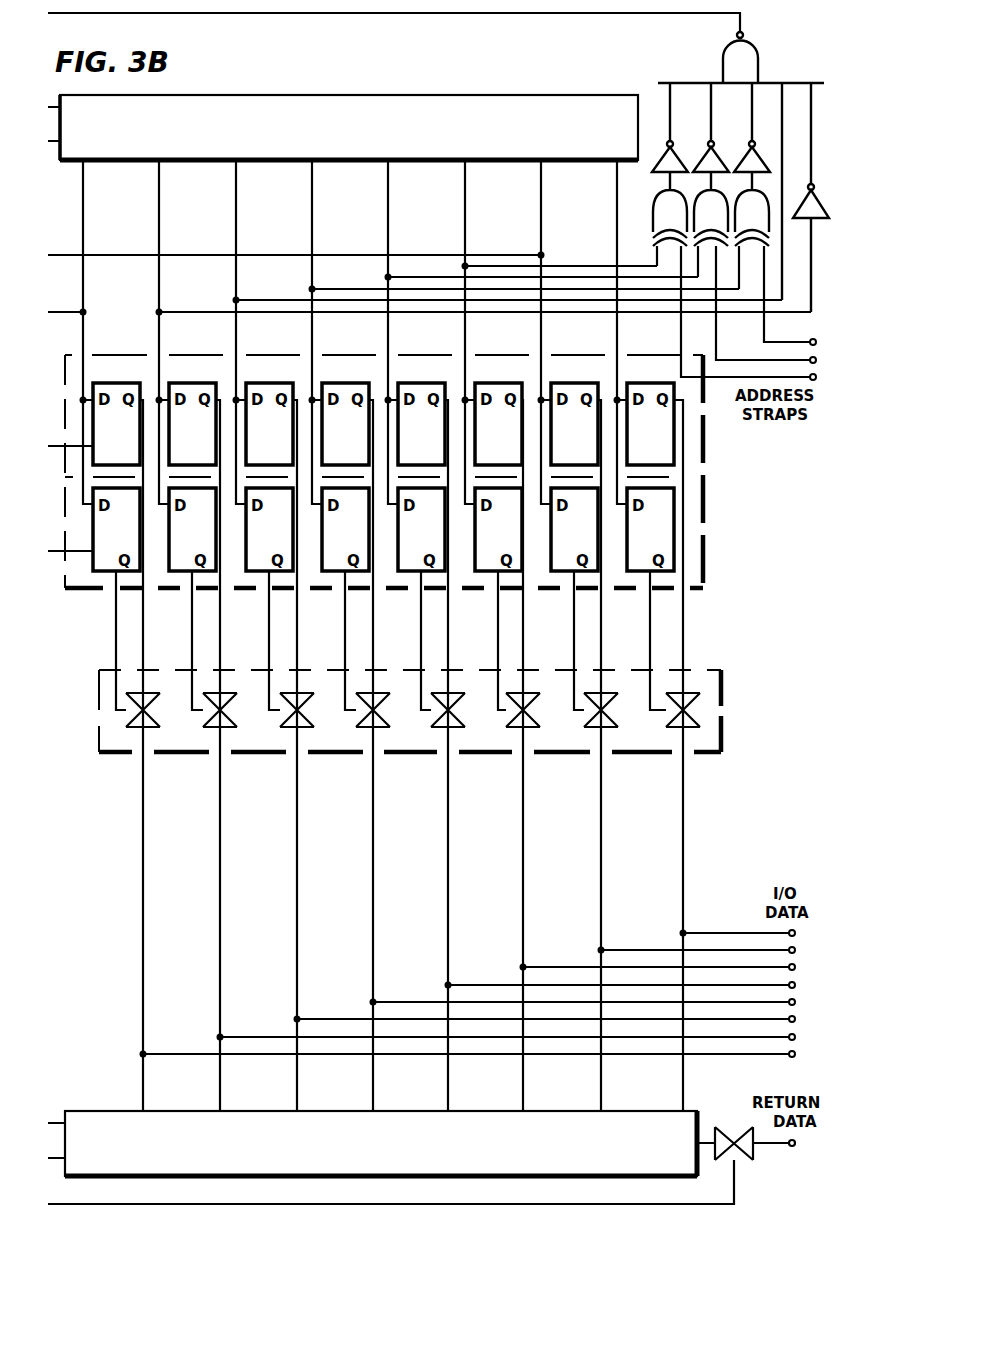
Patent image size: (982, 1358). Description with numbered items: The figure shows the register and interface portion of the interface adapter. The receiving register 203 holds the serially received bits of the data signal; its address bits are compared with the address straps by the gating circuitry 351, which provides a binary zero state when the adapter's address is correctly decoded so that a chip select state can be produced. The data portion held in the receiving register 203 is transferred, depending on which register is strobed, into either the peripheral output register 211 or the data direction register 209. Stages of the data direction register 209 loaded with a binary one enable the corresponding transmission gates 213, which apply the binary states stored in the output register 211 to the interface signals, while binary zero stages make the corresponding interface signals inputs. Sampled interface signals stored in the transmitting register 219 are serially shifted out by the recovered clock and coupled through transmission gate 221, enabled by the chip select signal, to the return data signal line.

The receiving register 203 is at (433, 95).
The gating circuitry 351 is at (710, 76).
The peripheral output register 211 is at (582, 355).
The data direction register 209 is at (415, 456).
The transmission gates 213 is at (722, 738).
The transmitting register 219 is at (540, 1111).
The transmission gate 221 is at (745, 1157).